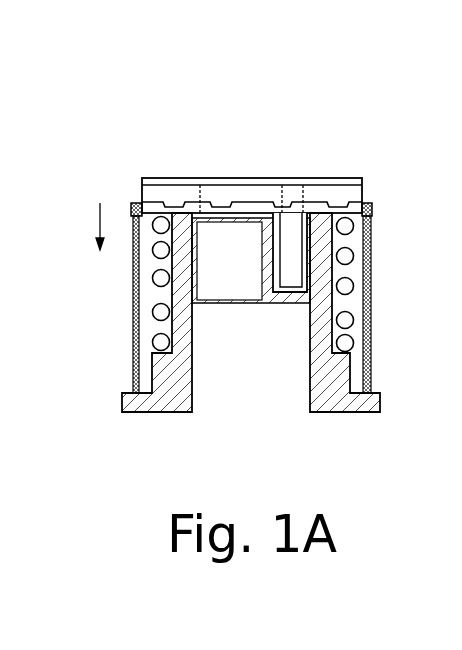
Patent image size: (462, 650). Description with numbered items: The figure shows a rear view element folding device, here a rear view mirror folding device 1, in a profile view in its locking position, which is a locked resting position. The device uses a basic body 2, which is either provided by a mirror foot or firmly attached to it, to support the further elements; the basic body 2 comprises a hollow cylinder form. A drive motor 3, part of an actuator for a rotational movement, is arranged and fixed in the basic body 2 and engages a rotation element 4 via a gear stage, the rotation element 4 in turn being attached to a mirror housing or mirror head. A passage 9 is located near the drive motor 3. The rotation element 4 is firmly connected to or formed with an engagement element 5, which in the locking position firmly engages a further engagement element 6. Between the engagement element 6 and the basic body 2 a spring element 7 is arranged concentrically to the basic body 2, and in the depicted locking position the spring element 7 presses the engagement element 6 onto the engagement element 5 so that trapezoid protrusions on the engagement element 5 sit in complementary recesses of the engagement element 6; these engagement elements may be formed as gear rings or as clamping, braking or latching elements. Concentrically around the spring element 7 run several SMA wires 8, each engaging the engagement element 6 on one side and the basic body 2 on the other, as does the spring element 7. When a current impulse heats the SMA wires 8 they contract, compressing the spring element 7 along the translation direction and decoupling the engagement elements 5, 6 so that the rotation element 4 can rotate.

The rear view mirror folding device 1 is at (256, 251).
The basic body 2 is at (340, 396).
The drive motor 3 is at (293, 242).
The rotation element 4 is at (252, 164).
The engagement element 5 is at (250, 178).
The engagement element 6 is at (217, 178).
The spring element 7 is at (345, 287).
The SMA wires 8 is at (370, 337).
The passage 9 is at (223, 288).